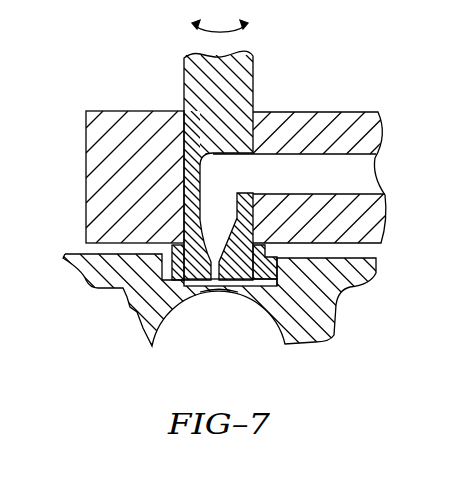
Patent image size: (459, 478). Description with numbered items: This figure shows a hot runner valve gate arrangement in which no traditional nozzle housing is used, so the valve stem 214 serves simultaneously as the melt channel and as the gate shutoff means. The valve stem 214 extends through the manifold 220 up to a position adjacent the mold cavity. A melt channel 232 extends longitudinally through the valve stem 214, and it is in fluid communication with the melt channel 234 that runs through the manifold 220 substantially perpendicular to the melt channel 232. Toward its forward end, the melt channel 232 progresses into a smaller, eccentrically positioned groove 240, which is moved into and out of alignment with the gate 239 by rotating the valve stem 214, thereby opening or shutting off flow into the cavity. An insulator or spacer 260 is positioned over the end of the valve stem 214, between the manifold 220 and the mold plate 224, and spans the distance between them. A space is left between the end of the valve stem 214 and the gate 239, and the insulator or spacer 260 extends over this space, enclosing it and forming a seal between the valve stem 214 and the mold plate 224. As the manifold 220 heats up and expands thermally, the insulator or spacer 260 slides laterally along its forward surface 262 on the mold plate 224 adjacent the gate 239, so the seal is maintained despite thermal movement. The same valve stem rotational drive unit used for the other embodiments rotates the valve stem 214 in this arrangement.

The valve stem 214 is at (242, 82).
The melt channel 232 is at (214, 172).
The melt channel 234 is at (367, 168).
The manifold 220 is at (368, 226).
The eccentrically positioned groove 240 is at (213, 264).
The insulator or spacer 260 is at (277, 273).
The forward surface 262 is at (256, 293).
The mold plate 224 is at (330, 312).
The gate 239 is at (213, 290).